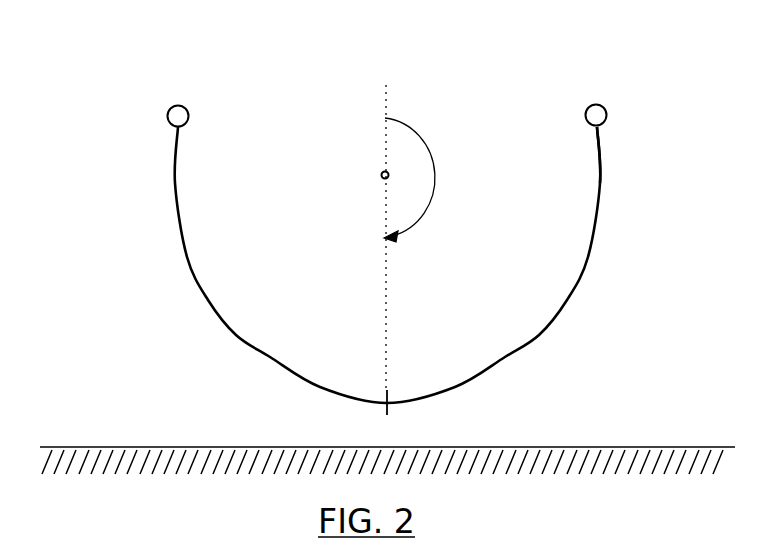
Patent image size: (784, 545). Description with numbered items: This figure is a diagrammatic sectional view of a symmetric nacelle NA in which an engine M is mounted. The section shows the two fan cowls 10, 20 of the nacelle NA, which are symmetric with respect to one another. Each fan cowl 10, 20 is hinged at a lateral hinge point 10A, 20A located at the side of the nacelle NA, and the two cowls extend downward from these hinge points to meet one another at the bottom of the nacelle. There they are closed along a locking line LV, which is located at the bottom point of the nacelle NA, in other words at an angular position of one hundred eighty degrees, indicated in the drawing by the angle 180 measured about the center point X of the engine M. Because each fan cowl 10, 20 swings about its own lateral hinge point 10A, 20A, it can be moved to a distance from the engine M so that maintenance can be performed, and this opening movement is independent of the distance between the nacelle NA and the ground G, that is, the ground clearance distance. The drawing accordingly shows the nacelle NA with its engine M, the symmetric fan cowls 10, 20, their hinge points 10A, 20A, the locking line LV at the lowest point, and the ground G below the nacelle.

The fan cowl 10 is at (190, 262).
The fan cowl 20 is at (588, 257).
The lateral hinge point 10A is at (178, 105).
The lateral hinge point 20A is at (596, 104).
The nacelle NA is at (621, 150).
The center point X is at (371, 181).
The 180 degree angle 180 is at (434, 180).
The engine M is at (358, 278).
The locking line LV is at (400, 388).
The ground G is at (695, 447).